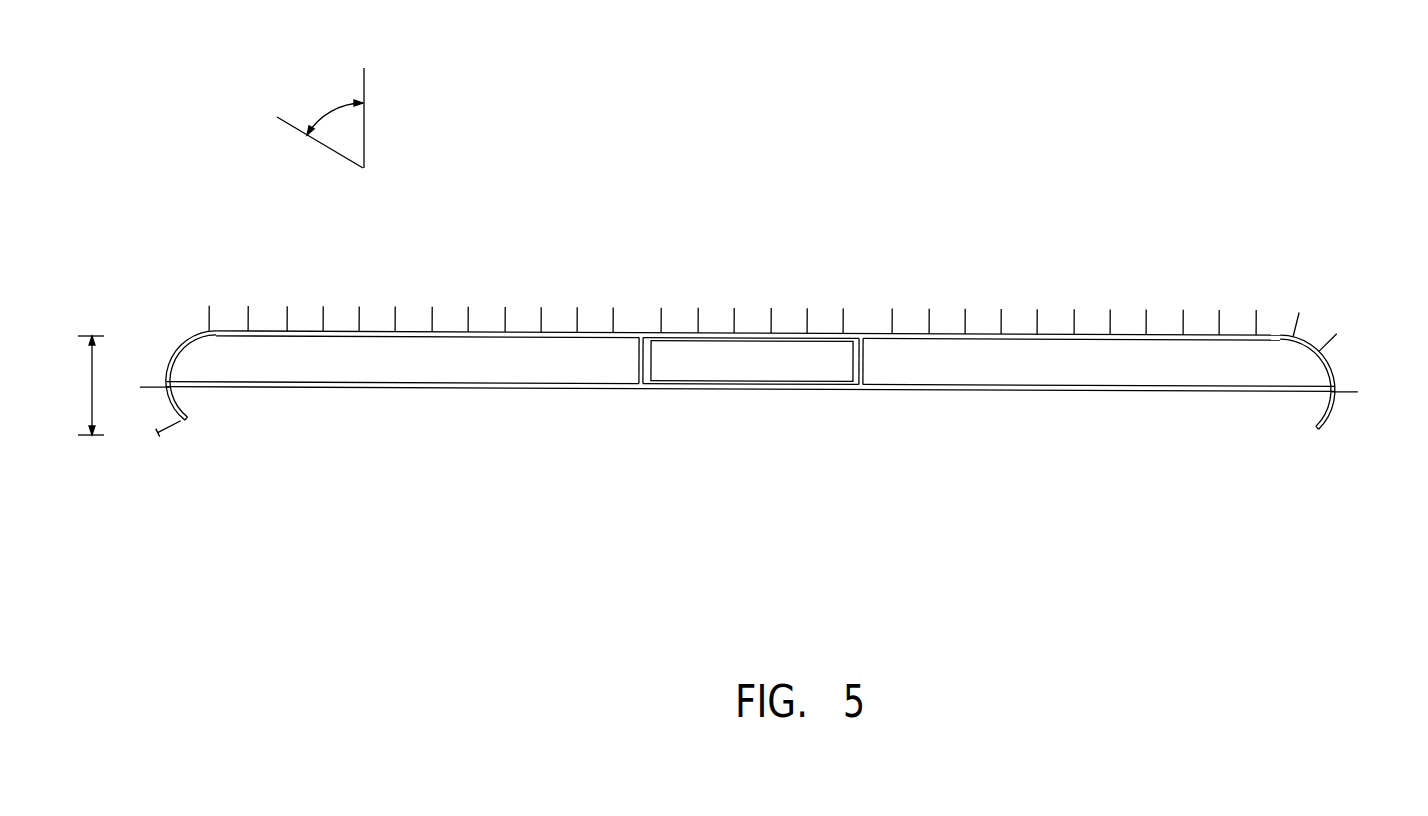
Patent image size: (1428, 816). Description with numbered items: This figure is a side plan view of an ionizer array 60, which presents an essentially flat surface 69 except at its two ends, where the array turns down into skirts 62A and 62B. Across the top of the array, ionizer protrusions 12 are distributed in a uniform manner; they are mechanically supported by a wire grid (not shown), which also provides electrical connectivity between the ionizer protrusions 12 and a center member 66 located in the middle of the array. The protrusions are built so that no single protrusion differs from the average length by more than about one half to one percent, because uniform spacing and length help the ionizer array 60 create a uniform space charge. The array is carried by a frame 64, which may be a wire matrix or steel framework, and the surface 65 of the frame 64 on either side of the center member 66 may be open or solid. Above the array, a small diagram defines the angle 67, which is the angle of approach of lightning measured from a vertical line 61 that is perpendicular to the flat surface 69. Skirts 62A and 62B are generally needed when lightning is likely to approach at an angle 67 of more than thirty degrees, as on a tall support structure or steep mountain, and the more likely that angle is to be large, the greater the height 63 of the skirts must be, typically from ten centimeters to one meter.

The ionizer protrusion 12 is at (542, 312).
The ionizer array 60 is at (949, 280).
The vertical line 61 is at (373, 83).
The skirt 62A is at (180, 350).
The skirt 62B is at (1333, 407).
The height 63 is at (92, 387).
The frame 64 is at (455, 388).
The surface 65 is at (553, 368).
The center member 66 is at (750, 389).
The angle 67 is at (335, 107).
The flat surface 69 is at (1328, 303).